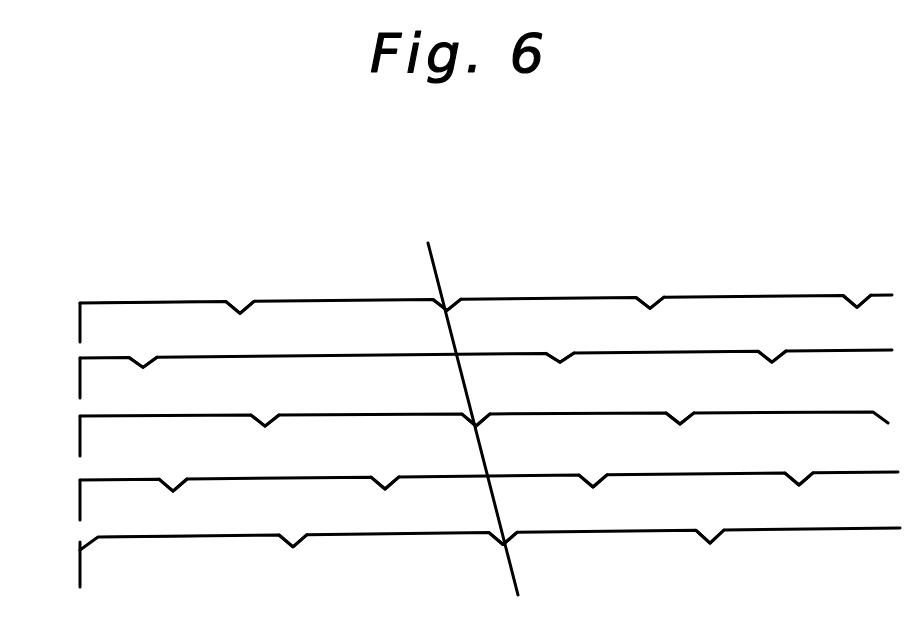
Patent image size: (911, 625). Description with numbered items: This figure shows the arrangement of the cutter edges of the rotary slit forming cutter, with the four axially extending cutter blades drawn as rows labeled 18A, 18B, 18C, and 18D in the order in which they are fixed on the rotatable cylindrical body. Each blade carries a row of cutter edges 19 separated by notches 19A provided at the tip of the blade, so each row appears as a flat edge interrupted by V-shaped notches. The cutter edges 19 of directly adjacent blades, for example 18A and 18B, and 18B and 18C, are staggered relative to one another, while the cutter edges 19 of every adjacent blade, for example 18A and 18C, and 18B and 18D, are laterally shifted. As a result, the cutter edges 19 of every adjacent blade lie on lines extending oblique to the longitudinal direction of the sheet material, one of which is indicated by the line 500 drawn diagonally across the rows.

The cutter blade 18A is at (95, 323).
The cutter blade 18B is at (95, 498).
The cutter blade 18C is at (95, 442).
The cutter blade 18D is at (95, 378).
The cutter edge 19 is at (148, 301).
The notch 19A is at (237, 299).
The line 500 is at (514, 577).